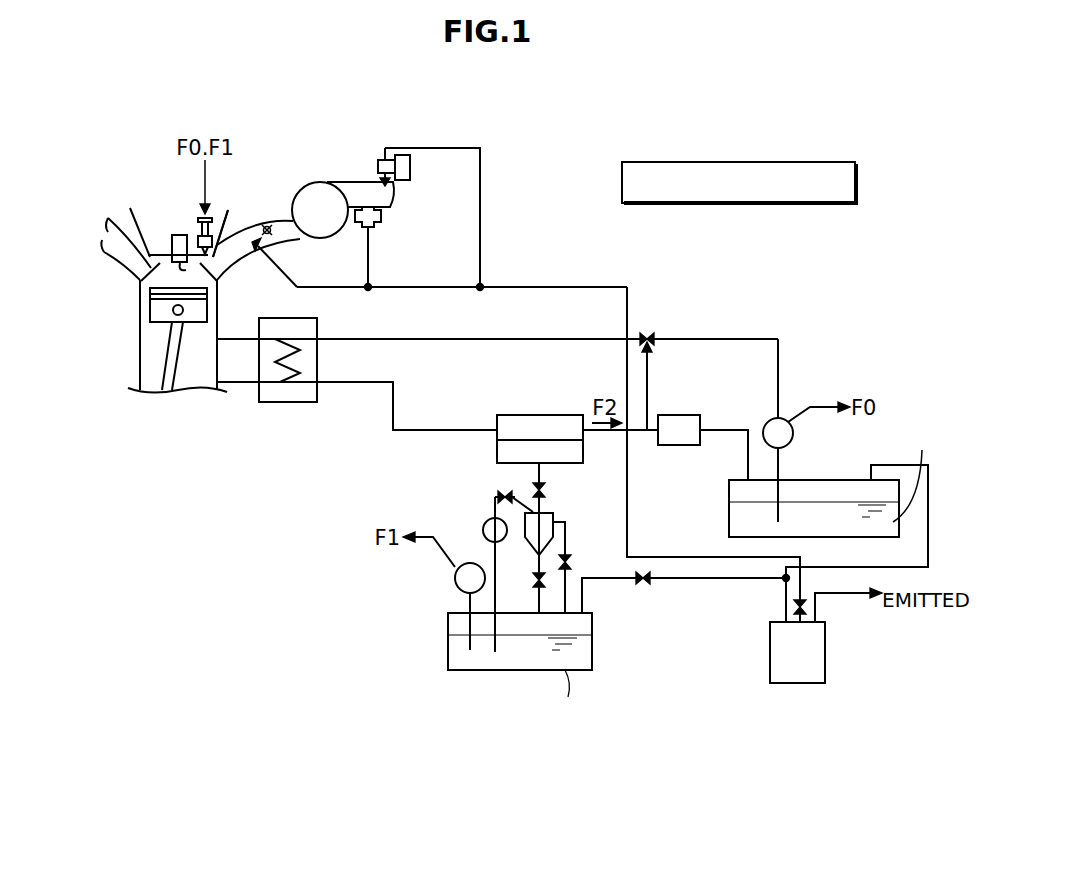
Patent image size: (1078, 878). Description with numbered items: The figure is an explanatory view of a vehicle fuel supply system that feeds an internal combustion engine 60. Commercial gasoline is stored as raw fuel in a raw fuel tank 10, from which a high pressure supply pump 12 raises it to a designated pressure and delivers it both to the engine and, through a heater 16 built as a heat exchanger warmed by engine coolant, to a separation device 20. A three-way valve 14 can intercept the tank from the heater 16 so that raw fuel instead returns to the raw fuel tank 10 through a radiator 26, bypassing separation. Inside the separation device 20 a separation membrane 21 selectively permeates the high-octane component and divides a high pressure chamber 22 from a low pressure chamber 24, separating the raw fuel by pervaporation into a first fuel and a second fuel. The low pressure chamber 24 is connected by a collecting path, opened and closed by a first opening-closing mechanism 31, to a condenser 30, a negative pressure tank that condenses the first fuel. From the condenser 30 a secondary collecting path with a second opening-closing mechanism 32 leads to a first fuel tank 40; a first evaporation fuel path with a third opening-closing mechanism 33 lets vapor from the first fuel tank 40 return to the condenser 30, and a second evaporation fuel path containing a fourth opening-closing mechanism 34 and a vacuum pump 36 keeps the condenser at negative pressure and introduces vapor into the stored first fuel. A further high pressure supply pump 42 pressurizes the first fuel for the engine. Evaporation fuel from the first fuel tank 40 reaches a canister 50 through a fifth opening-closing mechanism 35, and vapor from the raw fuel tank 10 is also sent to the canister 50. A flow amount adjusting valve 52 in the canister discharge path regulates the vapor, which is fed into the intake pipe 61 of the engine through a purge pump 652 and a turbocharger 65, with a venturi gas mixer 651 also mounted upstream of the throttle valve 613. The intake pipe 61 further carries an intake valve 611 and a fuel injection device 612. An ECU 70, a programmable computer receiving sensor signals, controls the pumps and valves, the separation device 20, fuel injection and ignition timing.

The raw fuel tank 10 is at (810, 480).
The high pressure supply pump 12 is at (793, 433).
The three-way valve 14 is at (649, 333).
The heater 16 is at (287, 402).
The separation device 20 is at (504, 416).
The separation membrane 21 is at (523, 438).
The high pressure chamber 22 is at (567, 416).
The low pressure chamber 24 is at (497, 452).
The radiator 26 is at (678, 413).
The condenser 30 is at (556, 512).
The first opening-closing mechanism 31 is at (532, 490).
The second opening-closing mechanism 32 is at (536, 583).
The third opening-closing mechanism 33 is at (569, 561).
The fourth opening-closing mechanism 34 is at (499, 496).
The fifth opening-closing mechanism 35 is at (645, 586).
The vacuum pump 36 is at (483, 530).
The first fuel tank 40 is at (478, 670).
The high pressure supply pump 42 is at (455, 578).
The canister 50 is at (808, 684).
The flow amount adjusting valve 52 is at (803, 602).
The internal combustion engine 60 is at (104, 197).
The intake pipe 61 is at (237, 263).
The intake valve 611 is at (228, 210).
The fuel injection device 612 is at (198, 222).
The throttle valve 613 is at (265, 227).
The turbocharger 65 is at (318, 193).
The venturi gas mixer 651 is at (383, 217).
The purge pump 652 is at (410, 180).
The ECU 70 is at (813, 162).